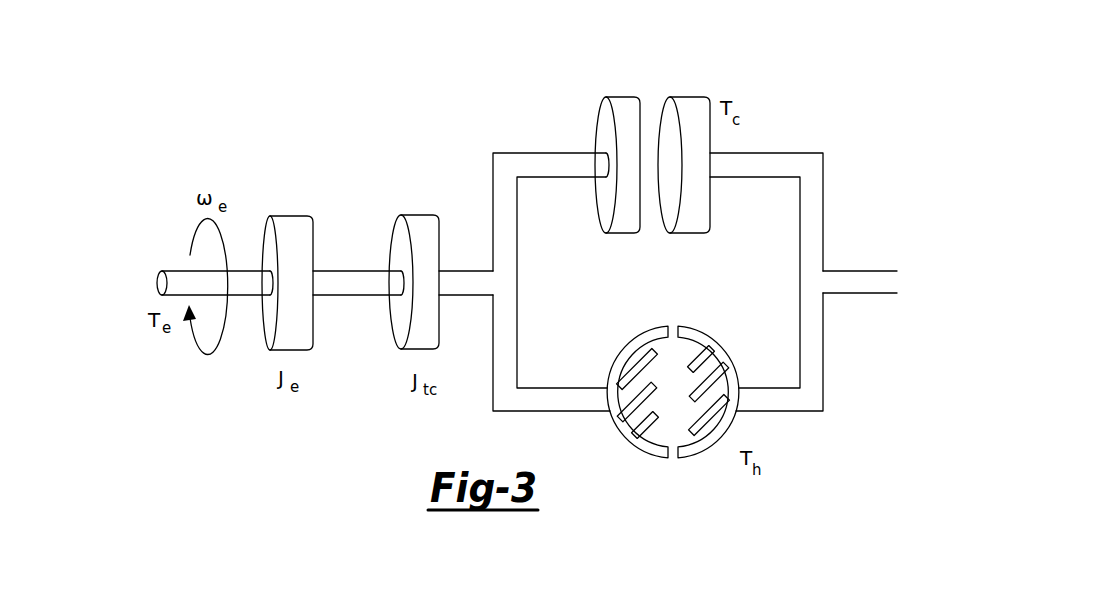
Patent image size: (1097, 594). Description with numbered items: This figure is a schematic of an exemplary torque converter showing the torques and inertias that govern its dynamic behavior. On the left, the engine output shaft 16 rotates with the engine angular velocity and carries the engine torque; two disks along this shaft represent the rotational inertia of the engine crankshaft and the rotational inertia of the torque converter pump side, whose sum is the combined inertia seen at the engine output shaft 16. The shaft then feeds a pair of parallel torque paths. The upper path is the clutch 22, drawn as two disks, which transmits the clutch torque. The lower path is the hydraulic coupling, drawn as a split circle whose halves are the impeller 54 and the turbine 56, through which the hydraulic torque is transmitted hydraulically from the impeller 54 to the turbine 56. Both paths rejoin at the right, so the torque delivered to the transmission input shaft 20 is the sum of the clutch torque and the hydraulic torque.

The engine output shaft 16 is at (162, 283).
The transmission input shaft 20 is at (887, 272).
The clutch 22 is at (653, 107).
The impeller 54 is at (631, 447).
The turbine 56 is at (726, 447).